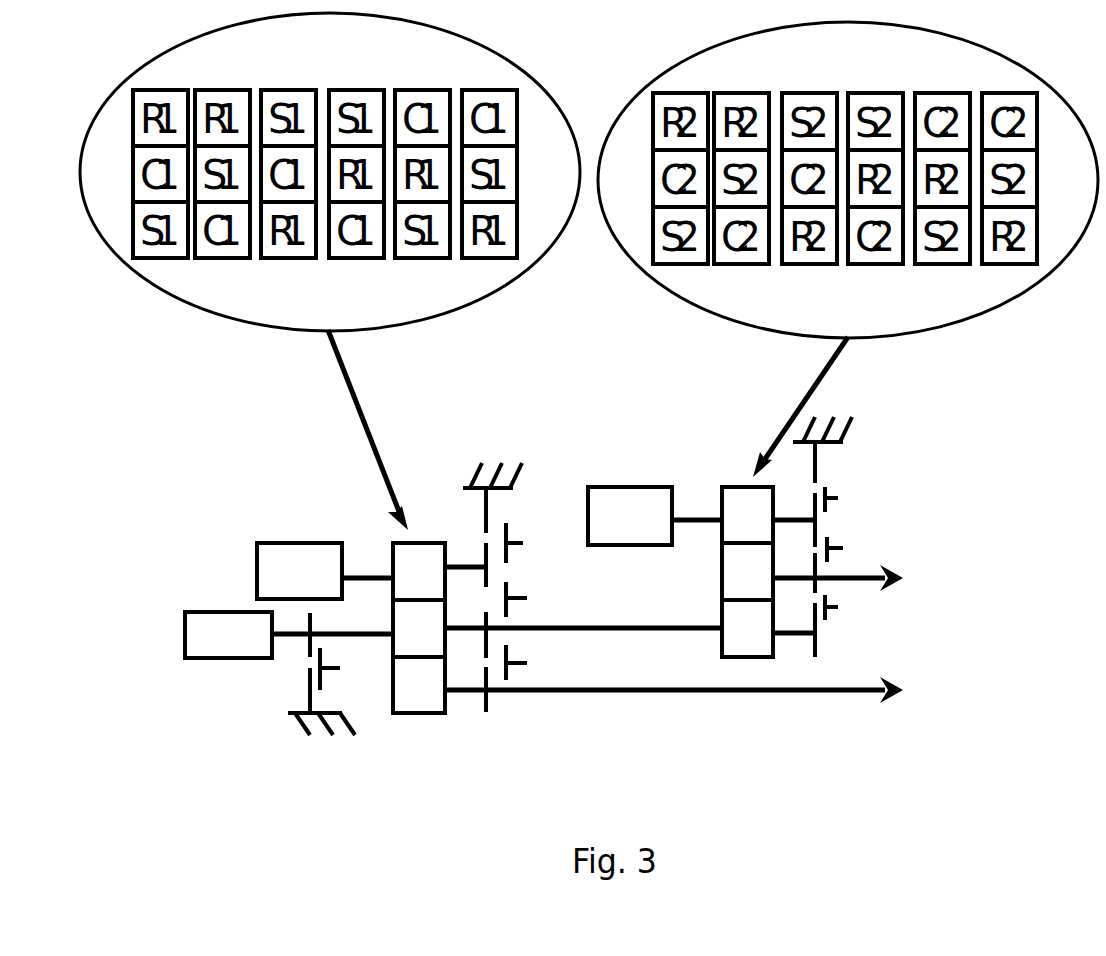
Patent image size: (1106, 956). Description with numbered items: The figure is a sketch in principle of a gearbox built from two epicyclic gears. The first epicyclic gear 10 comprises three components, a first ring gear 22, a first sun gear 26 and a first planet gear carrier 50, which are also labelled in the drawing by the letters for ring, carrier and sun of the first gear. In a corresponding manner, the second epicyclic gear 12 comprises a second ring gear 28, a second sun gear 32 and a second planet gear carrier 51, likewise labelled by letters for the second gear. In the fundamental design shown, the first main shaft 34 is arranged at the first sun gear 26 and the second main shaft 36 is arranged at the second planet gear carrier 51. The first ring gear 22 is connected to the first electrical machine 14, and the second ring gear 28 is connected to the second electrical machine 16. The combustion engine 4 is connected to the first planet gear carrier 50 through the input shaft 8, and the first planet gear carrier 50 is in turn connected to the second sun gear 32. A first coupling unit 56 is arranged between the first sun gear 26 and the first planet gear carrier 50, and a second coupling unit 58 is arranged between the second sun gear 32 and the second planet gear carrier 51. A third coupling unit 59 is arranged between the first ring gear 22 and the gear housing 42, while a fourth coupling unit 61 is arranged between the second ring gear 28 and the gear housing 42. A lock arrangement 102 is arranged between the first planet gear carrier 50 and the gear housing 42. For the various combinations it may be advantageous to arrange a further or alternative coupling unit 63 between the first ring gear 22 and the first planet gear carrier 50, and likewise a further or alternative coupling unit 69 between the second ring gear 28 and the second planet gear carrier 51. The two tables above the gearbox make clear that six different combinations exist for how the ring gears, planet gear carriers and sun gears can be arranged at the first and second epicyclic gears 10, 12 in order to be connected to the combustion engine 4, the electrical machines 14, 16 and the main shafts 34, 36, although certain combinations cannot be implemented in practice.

The combustion engine 4 is at (185, 613).
The input shaft 8 is at (358, 635).
The first epicyclic gear 10 is at (428, 659).
The second epicyclic gear 12 is at (706, 546).
The first electrical machine 14 is at (257, 543).
The second electrical machine 16 is at (633, 487).
The first ring gear 22 is at (392, 563).
The first sun gear 26 is at (445, 702).
The second ring gear 28 is at (727, 487).
The second sun gear 32 is at (681, 584).
The first main shaft 34 is at (657, 692).
The second main shaft 36 is at (863, 572).
The gear housing 42 is at (290, 713).
The first planet gear carrier 50 is at (392, 623).
The second planet gear carrier 51 is at (722, 588).
The first coupling unit 56 is at (527, 663).
The second coupling unit 58 is at (838, 608).
The third coupling unit 59 is at (520, 540).
The fourth coupling unit 61 is at (838, 497).
The further or alternative coupling unit 63 is at (523, 598).
The further or alternative coupling unit 69 is at (843, 547).
The lock arrangement 102 is at (340, 668).